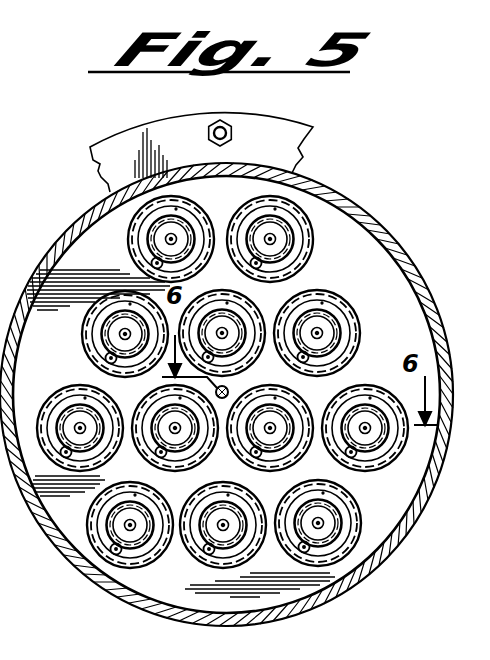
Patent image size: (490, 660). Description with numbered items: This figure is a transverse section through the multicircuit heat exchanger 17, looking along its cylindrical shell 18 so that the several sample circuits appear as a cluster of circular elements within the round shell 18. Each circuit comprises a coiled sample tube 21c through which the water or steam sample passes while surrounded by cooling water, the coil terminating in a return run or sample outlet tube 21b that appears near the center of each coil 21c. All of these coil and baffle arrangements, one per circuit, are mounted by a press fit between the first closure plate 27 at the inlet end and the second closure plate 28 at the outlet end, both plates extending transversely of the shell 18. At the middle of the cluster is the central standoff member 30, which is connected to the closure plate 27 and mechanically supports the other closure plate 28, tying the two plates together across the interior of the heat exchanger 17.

The heat exchanger 17 is at (226, 369).
The cylindrical shell 18 is at (352, 207).
The sample outlet tube 21b is at (322, 523).
The coiled sample tube 21c is at (97, 343).
The first closure plate 27 is at (362, 277).
The second closure plate 28 is at (156, 155).
The central standoff member 30 is at (230, 391).